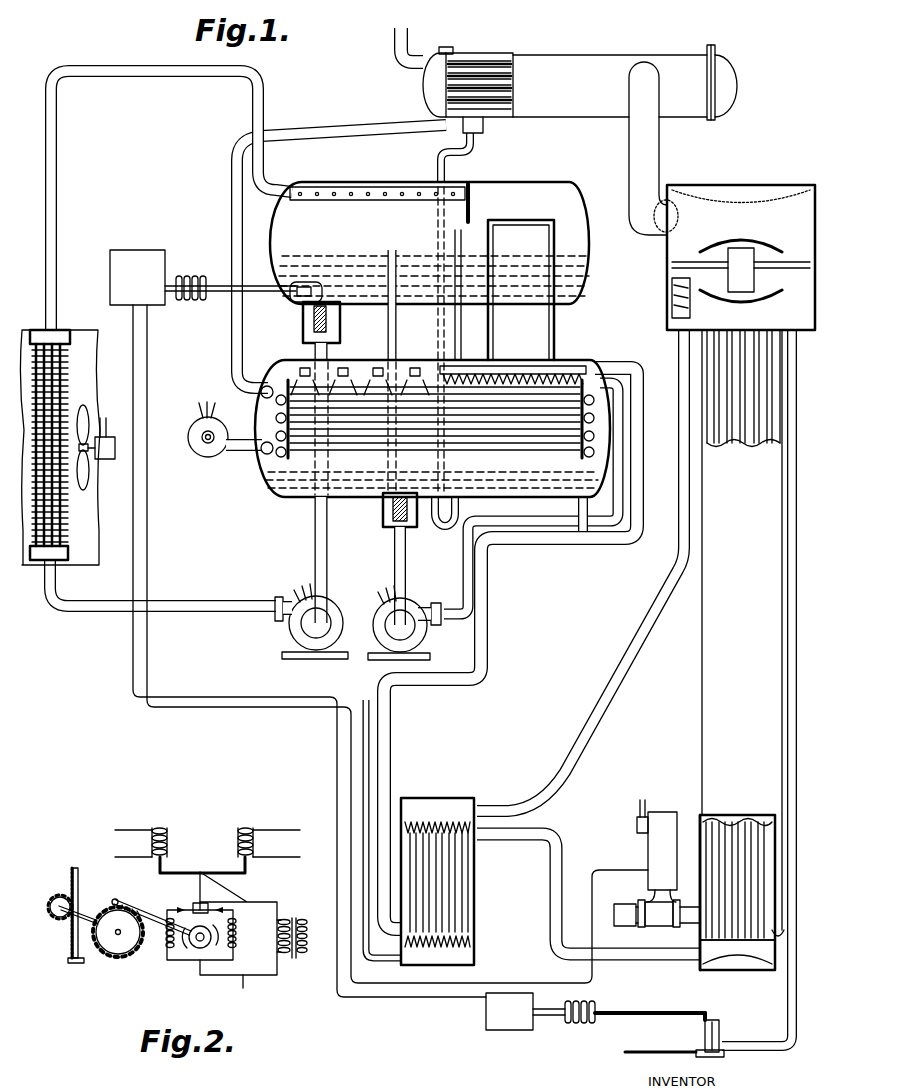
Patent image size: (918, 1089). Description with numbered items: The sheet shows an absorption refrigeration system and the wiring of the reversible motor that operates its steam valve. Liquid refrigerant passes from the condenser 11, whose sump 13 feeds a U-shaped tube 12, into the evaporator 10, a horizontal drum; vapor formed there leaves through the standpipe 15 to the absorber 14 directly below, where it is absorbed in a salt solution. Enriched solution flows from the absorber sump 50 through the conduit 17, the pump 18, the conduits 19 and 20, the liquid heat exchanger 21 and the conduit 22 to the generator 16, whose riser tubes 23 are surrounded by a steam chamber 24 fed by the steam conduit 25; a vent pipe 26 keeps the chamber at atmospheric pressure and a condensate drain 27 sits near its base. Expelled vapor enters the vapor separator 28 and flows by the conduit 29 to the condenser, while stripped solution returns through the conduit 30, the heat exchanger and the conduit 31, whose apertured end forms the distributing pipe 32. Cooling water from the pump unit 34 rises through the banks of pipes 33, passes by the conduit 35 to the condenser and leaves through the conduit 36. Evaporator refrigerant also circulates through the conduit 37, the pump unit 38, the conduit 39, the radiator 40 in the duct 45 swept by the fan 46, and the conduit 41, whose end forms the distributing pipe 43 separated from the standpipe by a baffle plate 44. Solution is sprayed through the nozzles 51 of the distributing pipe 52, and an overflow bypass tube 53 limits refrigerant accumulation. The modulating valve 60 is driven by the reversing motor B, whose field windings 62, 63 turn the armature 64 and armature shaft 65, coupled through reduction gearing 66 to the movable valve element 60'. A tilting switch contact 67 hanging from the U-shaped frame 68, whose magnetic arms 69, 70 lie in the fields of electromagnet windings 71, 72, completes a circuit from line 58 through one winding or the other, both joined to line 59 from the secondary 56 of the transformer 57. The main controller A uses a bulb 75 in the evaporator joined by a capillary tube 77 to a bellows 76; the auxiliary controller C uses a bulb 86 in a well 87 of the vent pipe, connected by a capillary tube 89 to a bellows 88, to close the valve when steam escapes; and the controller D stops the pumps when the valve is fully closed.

In FIG. 1, the evaporator 10 is at (530, 181).
In FIG. 1, the condenser 11 is at (611, 117).
In FIG. 1, the U-shaped tube 12 is at (438, 160).
In FIG. 1, the sump 13 is at (484, 126).
In FIG. 1, the absorber 14 is at (264, 492).
In FIG. 1, the standpipe 15 is at (556, 333).
In FIG. 1, the generator 16 is at (702, 685).
In FIG. 1, the conduit 17 is at (407, 547).
In FIG. 1, the pump 18 is at (410, 594).
In FIG. 1, the conduit 19 is at (458, 590).
In FIG. 1, the conduit 20 is at (392, 728).
In FIG. 1, the liquid heat exchanger 21 is at (478, 866).
In FIG. 1, the conduit 22 is at (552, 908).
In FIG. 1, the riser tubes 23 is at (745, 820).
In FIG. 1, the steam chamber 24 is at (699, 818).
In FIG. 1, the conduit 25 is at (624, 906).
In FIG. 1, the outlet vent pipe 26 is at (786, 1016).
In FIG. 1, the condensate drain 27 is at (776, 968).
In FIG. 1, the vapor separator 28 is at (668, 280).
In FIG. 1, the conduit 29 is at (656, 160).
In FIG. 1, the conduit 30 is at (640, 648).
In FIG. 1, the conduit 31 is at (368, 796).
In FIG. 1, the distributing pipe 32 is at (526, 366).
In FIG. 1, the banks of pipes 33 is at (535, 445).
In FIG. 1, the pump unit 34 is at (208, 457).
In FIG. 1, the conduit 35 is at (232, 358).
In FIG. 1, the conduit 36 is at (392, 52).
In FIG. 1, the conduit 37 is at (314, 547).
In FIG. 1, the pump unit 38 is at (290, 630).
In FIG. 1, the conduit 39 is at (177, 604).
In FIG. 1, the cooling element 40 is at (62, 515).
In FIG. 1, the conduit 41 is at (57, 243).
In FIG. 1, the liquid distributing pipe 43 is at (345, 203).
In FIG. 1, the baffle plate 44 is at (472, 205).
In FIG. 1, the duct 45 is at (94, 333).
In FIG. 1, the motor-driven fan 46 is at (106, 460).
In FIG. 1, the sump 50 is at (383, 514).
In FIG. 1, the nozzles 51 is at (377, 364).
In FIG. 1, the liquid distributing pipe 52 is at (405, 366).
In FIG. 1, the overflow bypass tube 53 is at (393, 251).
In FIG. 2, the secondary 56 is at (292, 920).
In FIG. 2, the transformer 57 is at (297, 972).
In FIG. 2, the line 58 is at (262, 902).
In FIG. 2, the line 59 is at (243, 975).
In FIG. 1, the modulating valve 60 is at (656, 919).
In FIG. 2, the movable element 60' is at (68, 934).
In FIG. 2, the field winding 62 is at (168, 946).
In FIG. 2, the field winding 63 is at (238, 933).
In FIG. 2, the armature 64 is at (199, 946).
In FIG. 2, the armature shaft 65 is at (142, 950).
In FIG. 2, the reduction gearing 66 is at (116, 899).
In FIG. 2, the tilting switch contact 67 is at (197, 889).
In FIG. 2, the U-shaped frame 68 is at (190, 868).
In FIG. 2, the arm 69 is at (160, 828).
In FIG. 2, the arm 70 is at (246, 828).
In FIG. 2, the electromagnet winding 71 is at (150, 841).
In FIG. 2, the electromagnet winding 72 is at (256, 841).
In FIG. 1, the bulb 75 is at (301, 306).
In FIG. 1, the bellows 76 is at (190, 302).
In FIG. 1, the capillary tube 77 is at (262, 286).
In FIG. 1, the bulb 86 is at (704, 1036).
In FIG. 1, the well 87 is at (715, 1020).
In FIG. 1, the bellows 88 is at (580, 1026).
In FIG. 1, the capillary tube 89 is at (634, 1011).
In FIG. 1, the main controller A is at (192, 266).
In FIG. 1, the electric reversing motor B is at (638, 854).
In FIG. 1, the auxiliary controller C is at (478, 1014).
In FIG. 1, the controller D is at (635, 818).